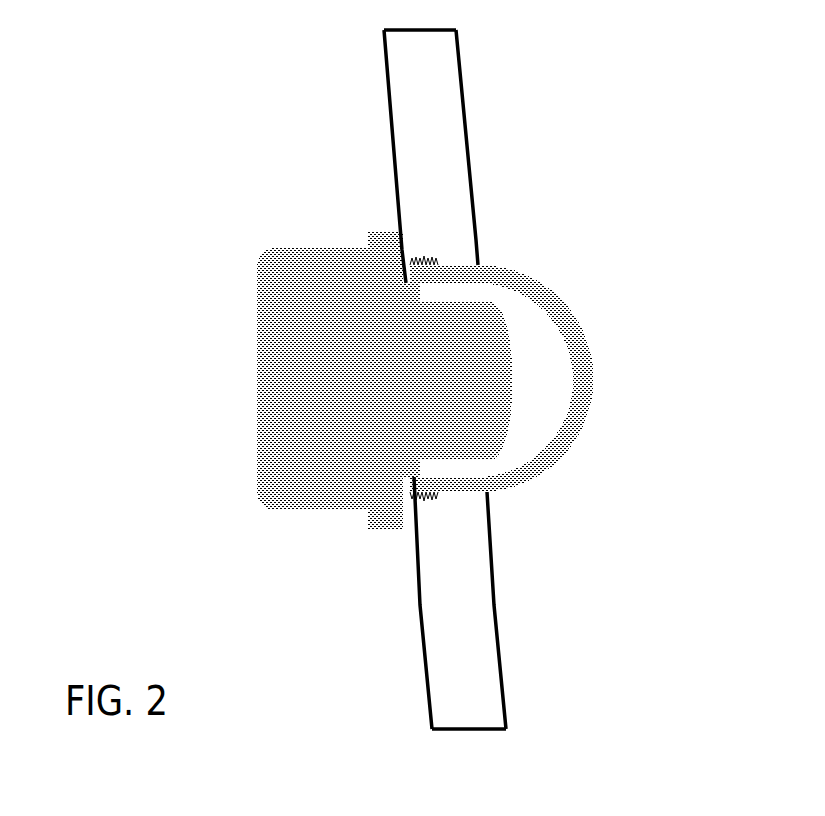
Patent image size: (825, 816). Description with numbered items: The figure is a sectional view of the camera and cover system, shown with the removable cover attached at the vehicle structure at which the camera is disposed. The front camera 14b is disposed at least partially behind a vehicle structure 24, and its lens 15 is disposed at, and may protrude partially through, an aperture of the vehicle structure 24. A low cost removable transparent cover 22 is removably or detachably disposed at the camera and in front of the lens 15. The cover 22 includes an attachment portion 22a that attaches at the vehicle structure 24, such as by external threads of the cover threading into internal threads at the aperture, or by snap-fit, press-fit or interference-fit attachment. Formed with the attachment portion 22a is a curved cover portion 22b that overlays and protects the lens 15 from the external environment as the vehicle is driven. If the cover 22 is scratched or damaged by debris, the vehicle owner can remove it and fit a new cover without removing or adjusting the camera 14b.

The front camera 14b is at (255, 382).
The lens 15 is at (470, 400).
The removable transparent cover 22 is at (585, 352).
The attachment portion 22a is at (435, 491).
The curved cover portion 22b is at (593, 385).
The vehicle structure 24 is at (393, 155).